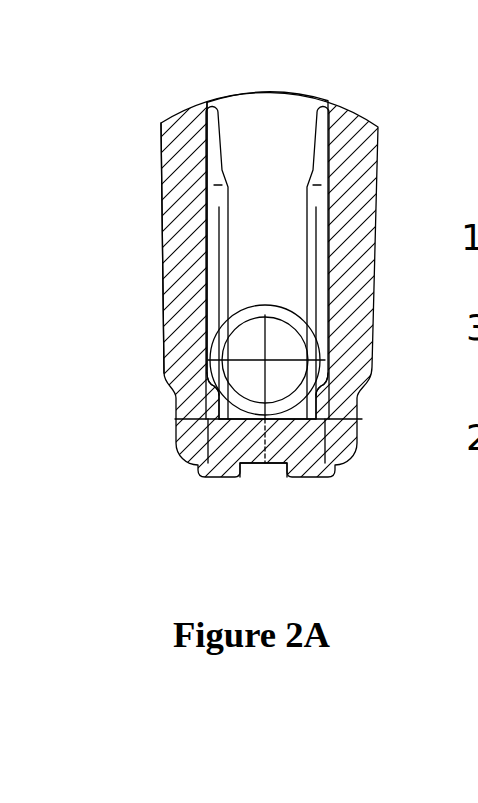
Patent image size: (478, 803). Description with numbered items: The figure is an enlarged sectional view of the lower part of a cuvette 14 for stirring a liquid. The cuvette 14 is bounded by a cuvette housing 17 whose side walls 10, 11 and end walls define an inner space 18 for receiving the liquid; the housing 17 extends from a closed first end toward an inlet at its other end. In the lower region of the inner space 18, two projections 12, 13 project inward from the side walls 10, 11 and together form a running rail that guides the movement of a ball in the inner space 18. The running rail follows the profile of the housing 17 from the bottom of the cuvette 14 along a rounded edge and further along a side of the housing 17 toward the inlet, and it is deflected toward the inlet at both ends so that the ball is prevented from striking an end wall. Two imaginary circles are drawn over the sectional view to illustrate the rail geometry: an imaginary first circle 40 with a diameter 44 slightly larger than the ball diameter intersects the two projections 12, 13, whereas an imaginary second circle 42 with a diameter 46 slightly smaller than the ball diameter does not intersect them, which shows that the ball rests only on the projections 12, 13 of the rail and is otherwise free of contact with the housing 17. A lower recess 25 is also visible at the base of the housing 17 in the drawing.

The side wall 10 is at (376, 290).
The side wall 11 is at (164, 320).
The projection 12 is at (317, 383).
The projection 13 is at (212, 387).
The cuvette 14 is at (181, 101).
The cuvette housing 17 is at (164, 262).
The inner space 18 is at (290, 197).
The bottom recess 25 is at (267, 466).
The imaginary first circle 40 is at (220, 327).
The imaginary second circle 42 is at (287, 305).
The diameter of the first circle 44 is at (290, 362).
The diameter of the second circle 46 is at (263, 340).